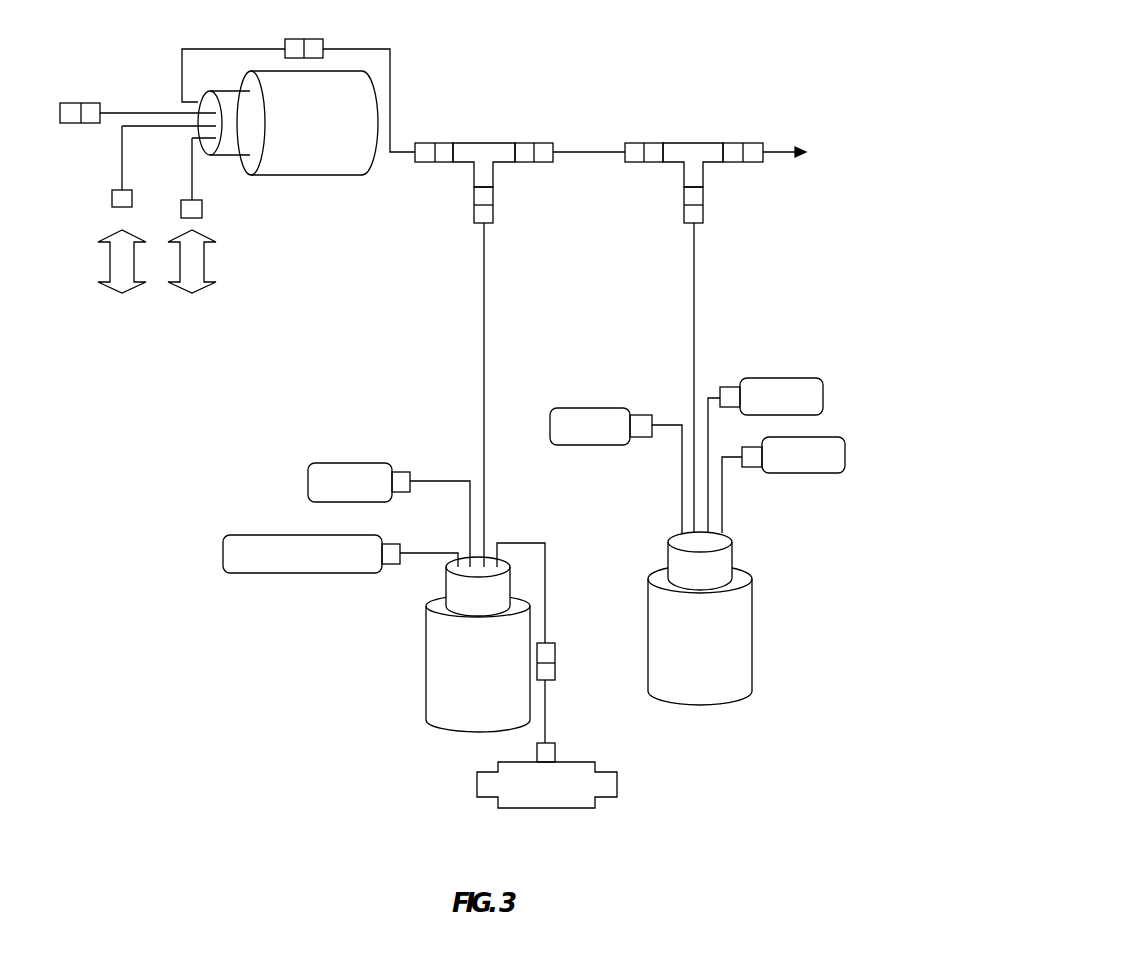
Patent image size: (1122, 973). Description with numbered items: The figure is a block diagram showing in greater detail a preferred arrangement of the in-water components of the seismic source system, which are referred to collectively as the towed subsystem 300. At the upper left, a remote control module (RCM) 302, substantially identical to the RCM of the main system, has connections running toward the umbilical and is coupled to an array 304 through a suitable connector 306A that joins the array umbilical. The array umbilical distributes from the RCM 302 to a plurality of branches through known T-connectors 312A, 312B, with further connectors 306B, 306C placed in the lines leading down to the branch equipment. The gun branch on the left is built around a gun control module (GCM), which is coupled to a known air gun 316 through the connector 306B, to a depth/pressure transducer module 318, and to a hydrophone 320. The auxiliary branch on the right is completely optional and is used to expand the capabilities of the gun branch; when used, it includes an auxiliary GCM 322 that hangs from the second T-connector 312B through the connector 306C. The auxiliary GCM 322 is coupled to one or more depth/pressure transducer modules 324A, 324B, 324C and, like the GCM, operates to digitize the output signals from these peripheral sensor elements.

The towed subsystem 300 is at (314, 660).
The remote control module (RCM) 302 is at (332, 178).
The array 304 is at (597, 93).
The connector 306A is at (295, 38).
The connector 306B is at (555, 653).
The connector 306C is at (705, 197).
The T-connector 312A is at (488, 142).
The T-connector 312B is at (705, 142).
The air gun 316 is at (578, 762).
The depth/pressure transducer module 318 is at (340, 463).
The hydrophone 320 is at (252, 535).
The auxiliary GCM 322 is at (755, 610).
The depth/pressure transducer module 324A is at (578, 408).
The depth/pressure transducer module 324B is at (793, 379).
The depth/pressure transducer module 324C is at (825, 437).